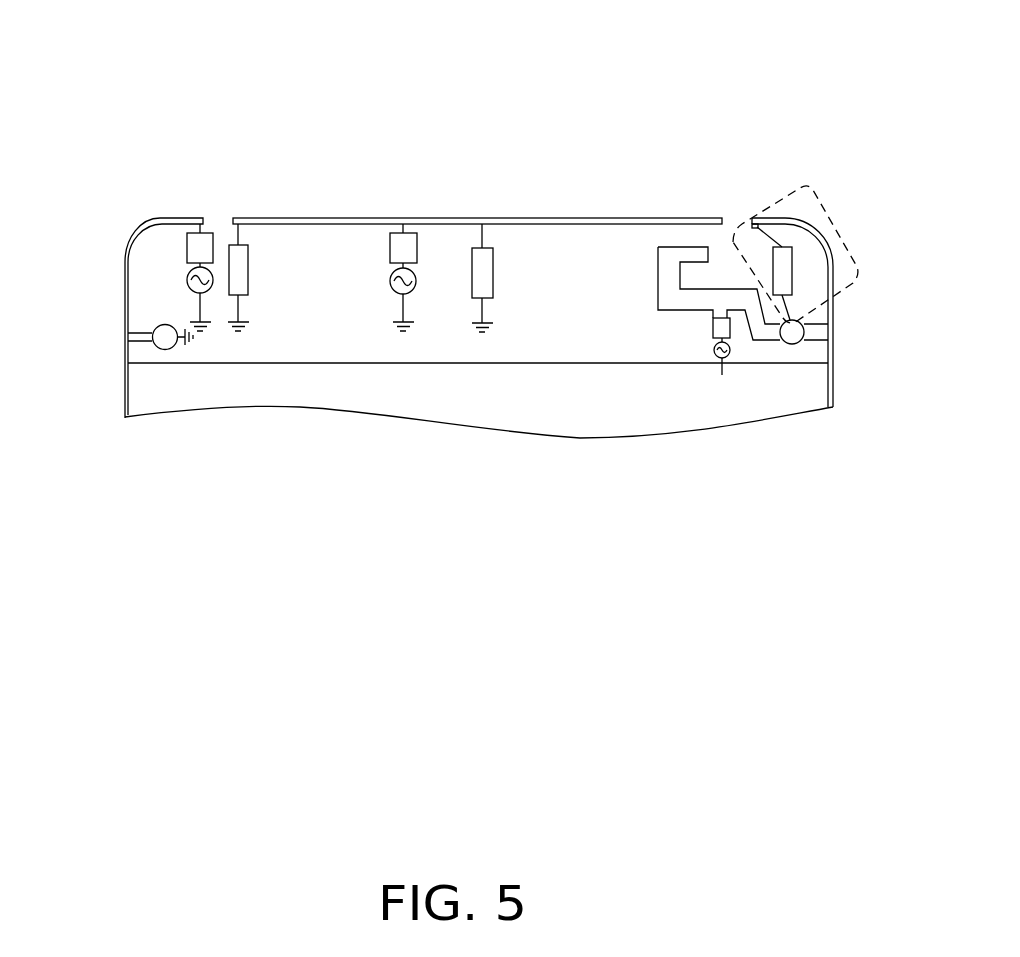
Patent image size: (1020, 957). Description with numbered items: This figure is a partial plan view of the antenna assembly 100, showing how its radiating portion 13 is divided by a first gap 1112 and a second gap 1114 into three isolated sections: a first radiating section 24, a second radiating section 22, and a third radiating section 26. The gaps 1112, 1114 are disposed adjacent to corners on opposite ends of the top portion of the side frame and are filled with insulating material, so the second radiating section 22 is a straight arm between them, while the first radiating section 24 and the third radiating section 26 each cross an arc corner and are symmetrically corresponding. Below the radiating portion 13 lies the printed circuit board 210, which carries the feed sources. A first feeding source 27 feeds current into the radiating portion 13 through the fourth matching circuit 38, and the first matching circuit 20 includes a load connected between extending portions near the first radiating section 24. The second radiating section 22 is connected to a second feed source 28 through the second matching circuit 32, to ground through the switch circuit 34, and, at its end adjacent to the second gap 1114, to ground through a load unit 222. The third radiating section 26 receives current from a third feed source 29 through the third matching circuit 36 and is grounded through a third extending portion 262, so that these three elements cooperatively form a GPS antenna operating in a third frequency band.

The antenna assembly 100 is at (473, 90).
The radiating portion 13 is at (670, 268).
The first matching circuit 20 is at (747, 222).
The second radiating section 22 is at (582, 218).
The first radiating section 24 is at (833, 278).
The third radiating section 26 is at (127, 270).
The first feeding source 27 is at (725, 357).
The second feed source 28 is at (408, 289).
The third feed source 29 is at (203, 290).
The second matching circuit 32 is at (390, 240).
The switch circuit 34 is at (493, 263).
The third matching circuit 36 is at (187, 248).
The fourth matching circuit 38 is at (713, 330).
The printed circuit board 210 is at (323, 383).
The load unit 222 is at (252, 258).
The third extending portion 262 is at (140, 338).
The first gap 1112 is at (737, 218).
The second gap 1114 is at (222, 220).